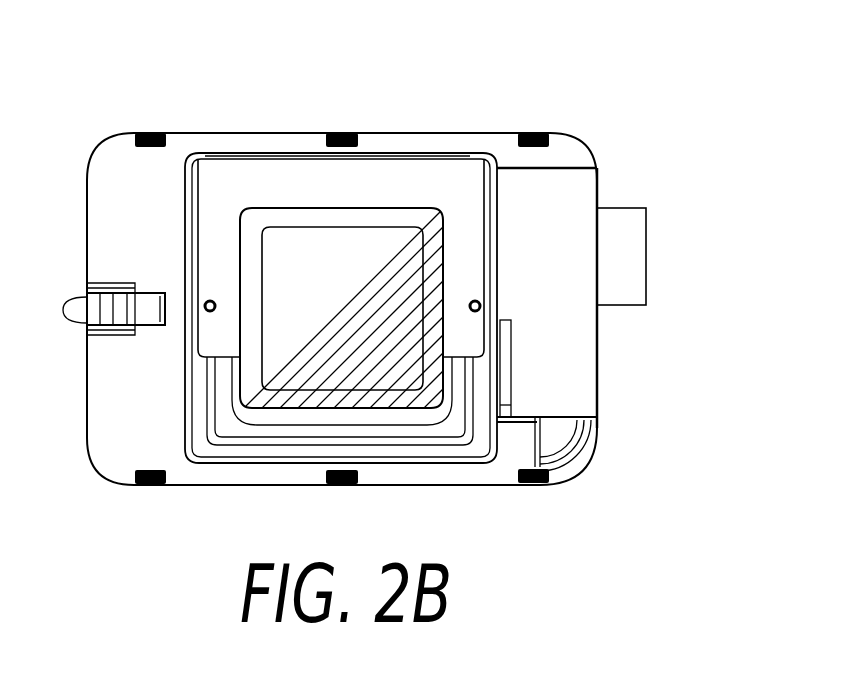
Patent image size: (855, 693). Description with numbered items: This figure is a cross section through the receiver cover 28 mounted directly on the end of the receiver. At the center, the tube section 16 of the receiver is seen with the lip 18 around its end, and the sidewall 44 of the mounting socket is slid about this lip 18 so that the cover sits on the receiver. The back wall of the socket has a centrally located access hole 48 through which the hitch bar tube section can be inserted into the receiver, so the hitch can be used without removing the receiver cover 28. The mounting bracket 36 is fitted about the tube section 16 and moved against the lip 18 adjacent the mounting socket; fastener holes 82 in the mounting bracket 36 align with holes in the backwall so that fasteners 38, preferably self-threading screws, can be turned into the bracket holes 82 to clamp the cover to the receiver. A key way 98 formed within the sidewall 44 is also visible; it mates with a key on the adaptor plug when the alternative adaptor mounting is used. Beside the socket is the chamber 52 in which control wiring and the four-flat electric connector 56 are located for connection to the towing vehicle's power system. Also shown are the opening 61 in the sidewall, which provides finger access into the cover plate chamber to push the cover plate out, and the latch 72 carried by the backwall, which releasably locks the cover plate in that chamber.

The receiver cover 28 is at (128, 130).
The key way 98 is at (268, 150).
The sidewall 44 is at (318, 148).
The tube section 16 is at (365, 210).
The mounting bracket 36 is at (440, 180).
The chamber 52 is at (573, 190).
The 4-flat electric connector 56 is at (640, 245).
The fastener holes 82 is at (208, 300).
The fasteners 38 is at (205, 325).
The access hole 48 is at (308, 320).
The opening 61 is at (558, 440).
The latch 72 is at (70, 324).
The lip 18 is at (410, 418).